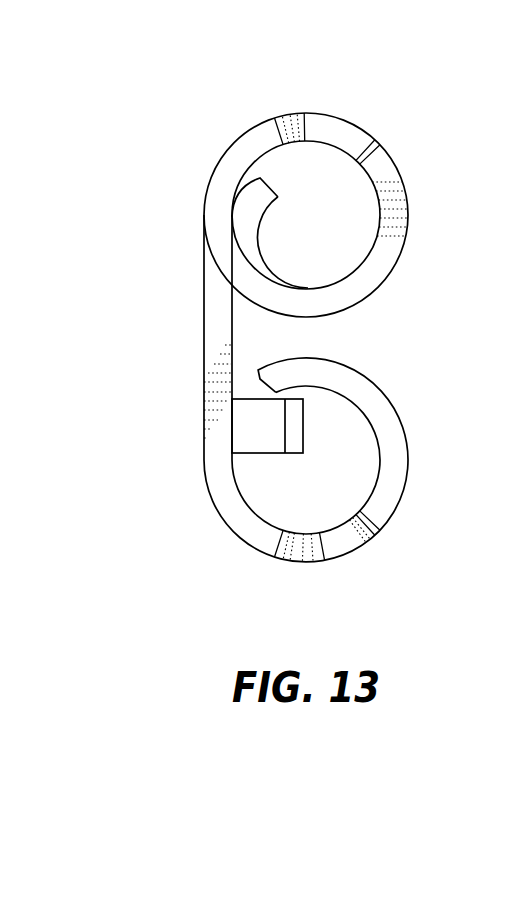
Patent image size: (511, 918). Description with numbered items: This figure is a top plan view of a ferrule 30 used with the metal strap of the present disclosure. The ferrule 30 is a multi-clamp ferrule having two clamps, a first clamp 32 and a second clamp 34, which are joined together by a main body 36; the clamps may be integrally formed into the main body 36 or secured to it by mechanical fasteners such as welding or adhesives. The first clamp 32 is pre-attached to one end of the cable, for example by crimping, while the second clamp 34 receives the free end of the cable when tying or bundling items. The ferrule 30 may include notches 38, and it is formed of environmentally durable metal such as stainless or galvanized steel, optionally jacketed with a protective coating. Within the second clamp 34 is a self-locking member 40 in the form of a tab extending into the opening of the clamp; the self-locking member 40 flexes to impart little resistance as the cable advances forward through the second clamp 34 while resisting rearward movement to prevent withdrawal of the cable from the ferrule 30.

The ferrule 30 is at (315, 333).
The first clamp 32 is at (410, 235).
The second clamp 34 is at (408, 455).
The main body 36 is at (203, 334).
The notches 38 is at (305, 130).
The self-locking member 40 is at (258, 437).